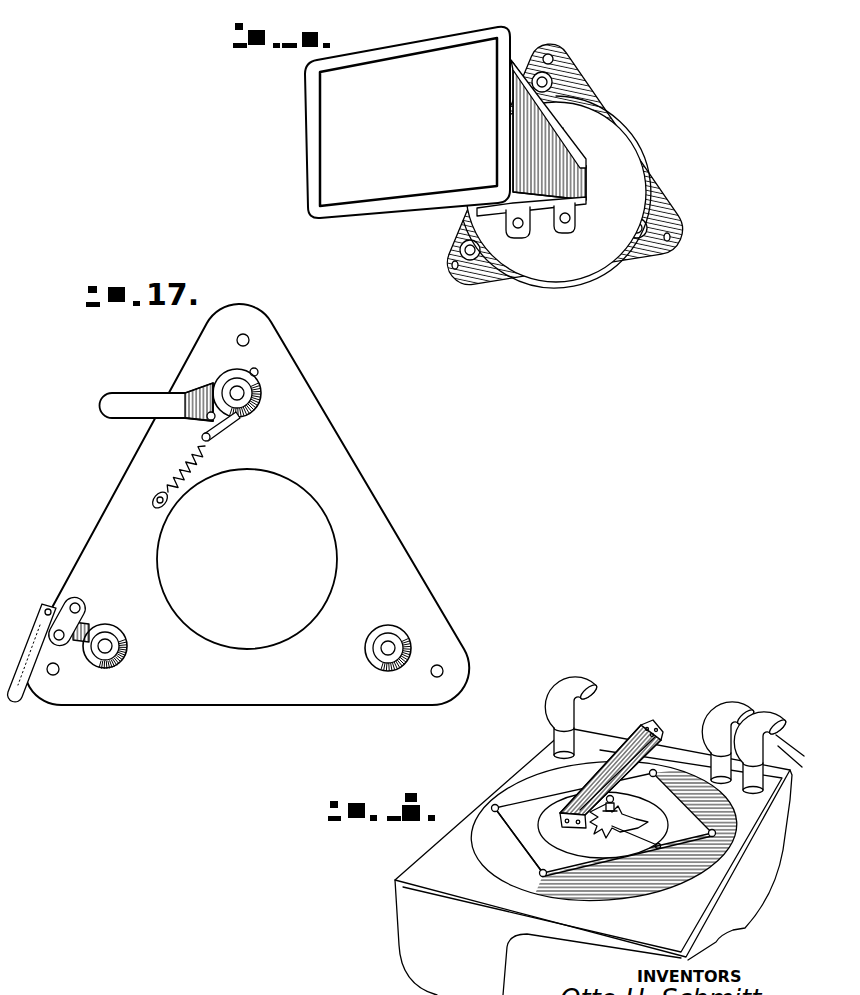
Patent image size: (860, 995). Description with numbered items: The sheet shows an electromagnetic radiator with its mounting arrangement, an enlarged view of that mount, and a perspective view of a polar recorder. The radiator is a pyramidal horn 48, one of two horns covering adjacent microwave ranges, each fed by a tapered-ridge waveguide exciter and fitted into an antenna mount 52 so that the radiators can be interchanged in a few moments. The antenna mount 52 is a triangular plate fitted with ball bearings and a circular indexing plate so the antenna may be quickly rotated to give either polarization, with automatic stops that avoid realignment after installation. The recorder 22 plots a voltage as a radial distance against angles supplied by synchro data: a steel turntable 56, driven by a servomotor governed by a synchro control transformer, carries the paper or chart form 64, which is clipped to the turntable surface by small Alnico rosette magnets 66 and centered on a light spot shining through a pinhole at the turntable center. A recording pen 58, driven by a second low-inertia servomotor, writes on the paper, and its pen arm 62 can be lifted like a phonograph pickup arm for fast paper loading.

In FIG. 18, the recorder 22 is at (405, 937).
In FIG. 16, the pyramidal horn 48 is at (313, 131).
In FIG. 16, the antenna mount 52 is at (660, 252).
In FIG. 17, the antenna mount 52 is at (322, 432).
In FIG. 18, the turntable 56 is at (665, 880).
In FIG. 18, the recording pen 58 is at (618, 806).
In FIG. 18, the pen arm 62 is at (596, 777).
In FIG. 18, the paper or chart form 64 is at (505, 845).
In FIG. 18, the Alnico rosette magnets 66 is at (493, 806).